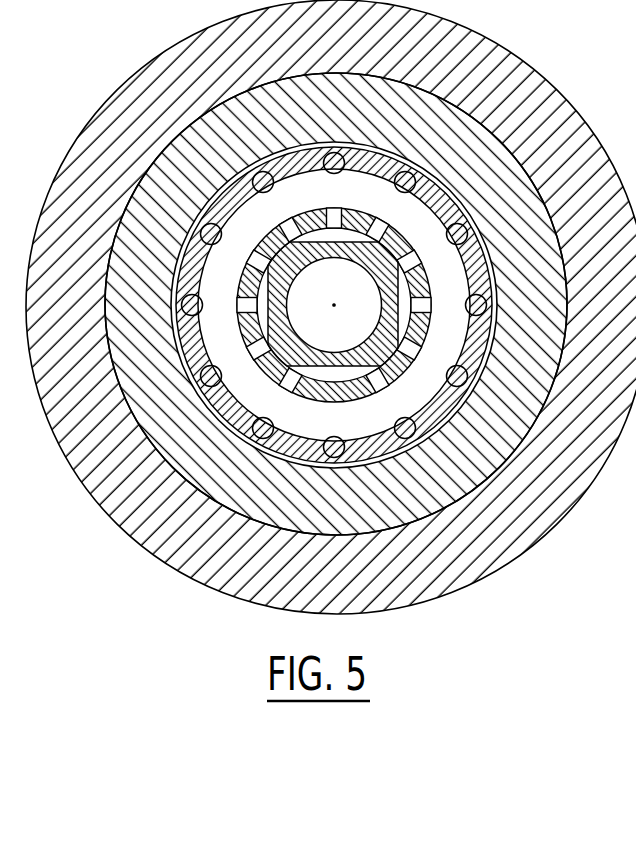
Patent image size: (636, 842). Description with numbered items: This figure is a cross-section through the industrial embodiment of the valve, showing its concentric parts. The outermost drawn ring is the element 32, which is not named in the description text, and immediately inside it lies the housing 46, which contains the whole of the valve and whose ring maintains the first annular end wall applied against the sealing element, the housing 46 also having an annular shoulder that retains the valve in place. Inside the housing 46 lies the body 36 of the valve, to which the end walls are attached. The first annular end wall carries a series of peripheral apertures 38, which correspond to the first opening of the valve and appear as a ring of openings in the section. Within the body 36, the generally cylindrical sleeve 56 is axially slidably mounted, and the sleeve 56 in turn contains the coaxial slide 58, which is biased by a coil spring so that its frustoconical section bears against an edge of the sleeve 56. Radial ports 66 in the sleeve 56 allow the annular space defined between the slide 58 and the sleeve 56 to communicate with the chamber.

The outer housing 32 is at (507, 48).
The housing 46 is at (473, 153).
The body 36 is at (477, 260).
The peripheral apertures 38 is at (336, 156).
The sleeve 56 is at (395, 246).
The radial ports 66 is at (332, 217).
The slide 58 is at (390, 287).